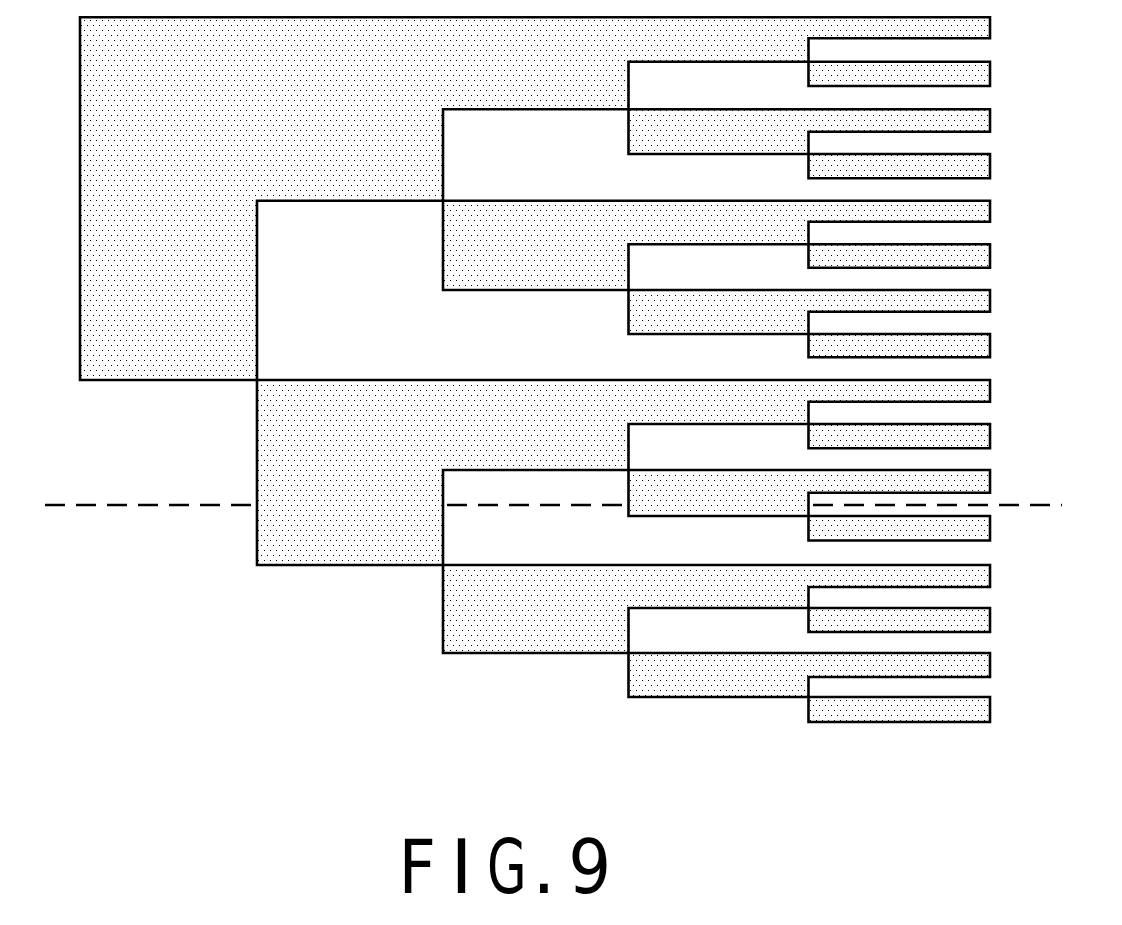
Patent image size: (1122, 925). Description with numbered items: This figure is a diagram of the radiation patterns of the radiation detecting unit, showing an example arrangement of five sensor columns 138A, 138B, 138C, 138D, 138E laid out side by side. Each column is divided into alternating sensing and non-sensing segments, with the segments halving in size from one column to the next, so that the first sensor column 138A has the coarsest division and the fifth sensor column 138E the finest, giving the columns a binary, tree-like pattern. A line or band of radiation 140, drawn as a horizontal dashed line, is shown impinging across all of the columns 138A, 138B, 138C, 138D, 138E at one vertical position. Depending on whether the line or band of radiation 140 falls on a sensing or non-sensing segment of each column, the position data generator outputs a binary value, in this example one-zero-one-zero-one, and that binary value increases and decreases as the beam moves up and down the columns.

The sensor column 138A is at (188, 793).
The sensor column 138B is at (370, 793).
The sensor column 138C is at (567, 791).
The sensor column 138D is at (752, 791).
The sensor column 138E is at (922, 791).
The line or band of radiation 140 is at (580, 505).